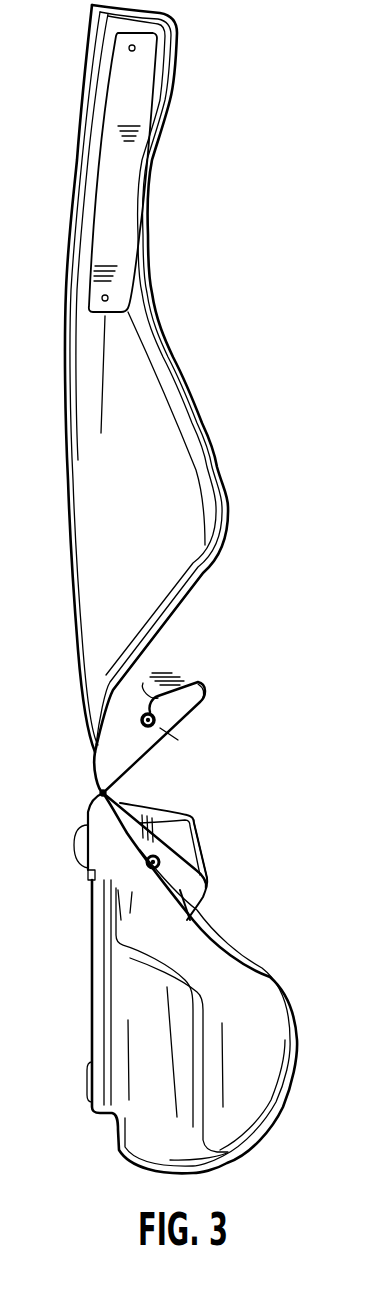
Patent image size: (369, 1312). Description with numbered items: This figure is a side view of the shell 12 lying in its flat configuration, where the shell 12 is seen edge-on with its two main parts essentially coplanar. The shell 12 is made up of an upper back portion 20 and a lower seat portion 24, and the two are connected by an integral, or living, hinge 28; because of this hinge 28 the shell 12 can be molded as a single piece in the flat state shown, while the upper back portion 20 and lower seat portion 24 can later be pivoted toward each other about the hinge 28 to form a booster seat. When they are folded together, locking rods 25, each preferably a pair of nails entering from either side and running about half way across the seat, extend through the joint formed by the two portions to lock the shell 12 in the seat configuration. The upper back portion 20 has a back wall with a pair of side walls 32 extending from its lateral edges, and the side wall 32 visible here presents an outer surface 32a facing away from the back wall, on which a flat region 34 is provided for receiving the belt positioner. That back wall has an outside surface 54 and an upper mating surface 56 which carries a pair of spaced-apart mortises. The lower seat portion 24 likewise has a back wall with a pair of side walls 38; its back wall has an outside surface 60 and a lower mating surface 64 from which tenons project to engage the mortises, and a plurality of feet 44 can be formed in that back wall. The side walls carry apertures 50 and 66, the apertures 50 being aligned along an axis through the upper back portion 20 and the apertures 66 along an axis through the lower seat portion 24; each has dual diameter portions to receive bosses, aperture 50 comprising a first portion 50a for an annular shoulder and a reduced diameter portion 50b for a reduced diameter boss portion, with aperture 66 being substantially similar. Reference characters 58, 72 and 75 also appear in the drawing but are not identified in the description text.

The shell 12 is at (190, 295).
The upper back portion 20 is at (207, 432).
The lower seat portion 24 is at (266, 980).
The locking rods 25 is at (125, 712).
The integral hinge 28 is at (108, 793).
The side walls 32 is at (183, 540).
The outer surface 32a is at (158, 480).
The flat region 34 is at (122, 200).
The side walls 38 is at (257, 1090).
The feet 44 is at (84, 825).
The apertures 50 is at (160, 690).
The first portion 50a is at (188, 688).
The reduced diameter portion 50b is at (130, 733).
The outside surface 54 is at (70, 508).
The upper mating surface 56 is at (173, 728).
The flange 58 is at (147, 683).
The outside surface 60 is at (90, 972).
The lower mating surface 64 is at (197, 883).
The apertures 66 is at (197, 866).
The arm 72 is at (185, 888).
The elastic member 75 is at (172, 677).